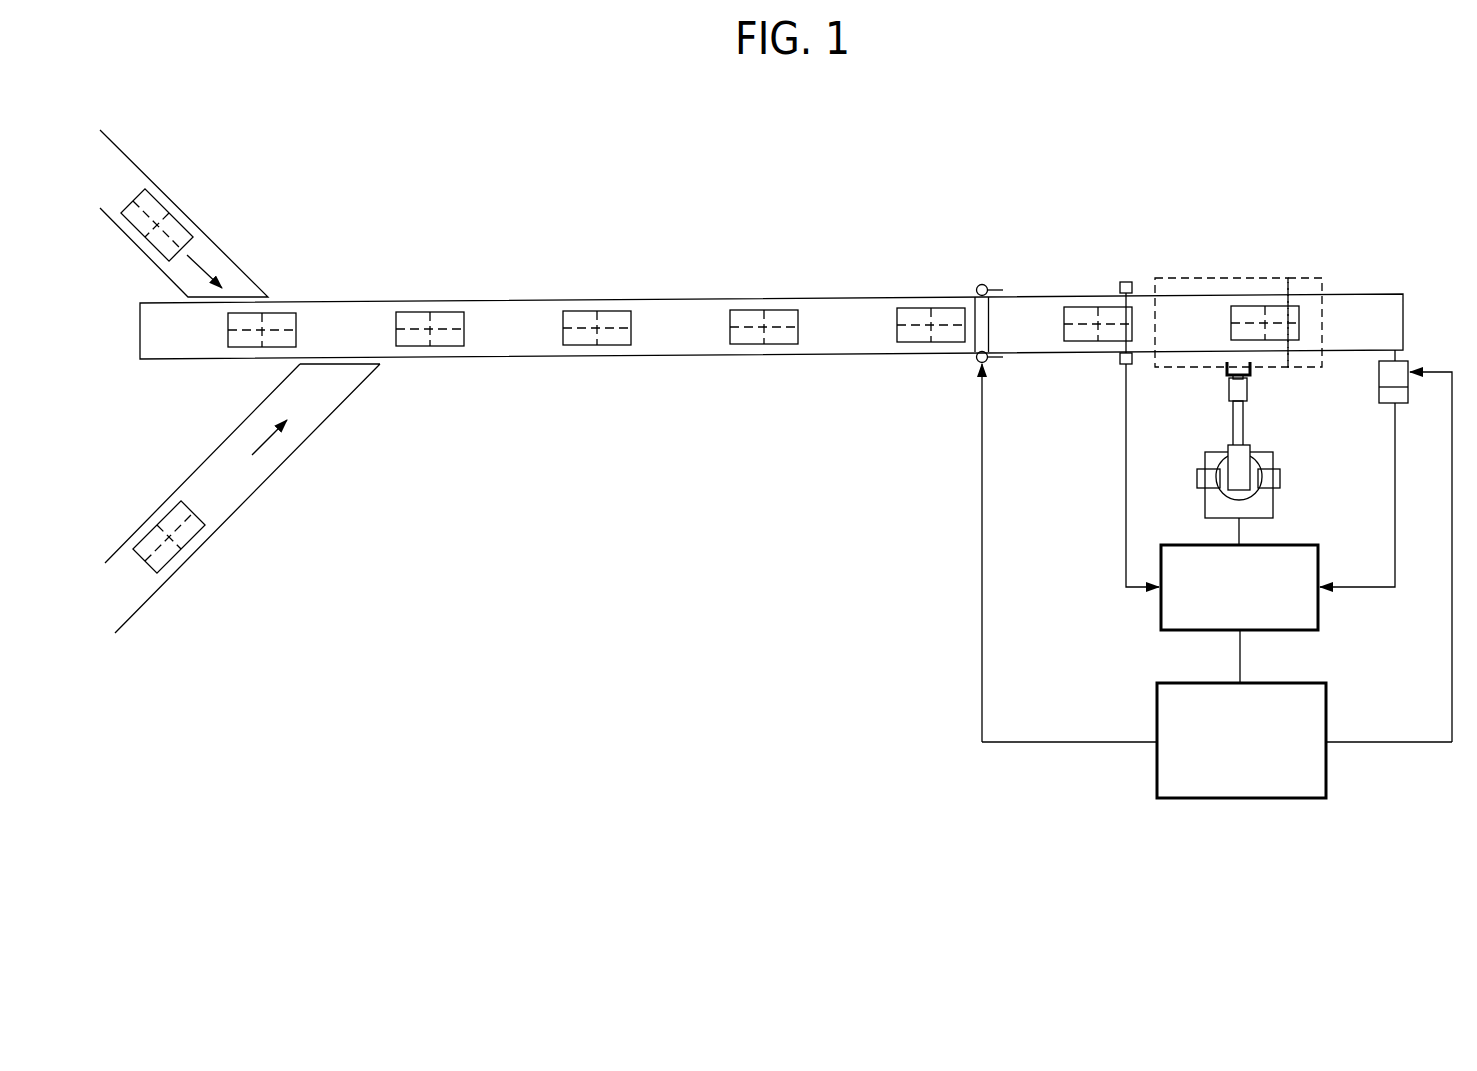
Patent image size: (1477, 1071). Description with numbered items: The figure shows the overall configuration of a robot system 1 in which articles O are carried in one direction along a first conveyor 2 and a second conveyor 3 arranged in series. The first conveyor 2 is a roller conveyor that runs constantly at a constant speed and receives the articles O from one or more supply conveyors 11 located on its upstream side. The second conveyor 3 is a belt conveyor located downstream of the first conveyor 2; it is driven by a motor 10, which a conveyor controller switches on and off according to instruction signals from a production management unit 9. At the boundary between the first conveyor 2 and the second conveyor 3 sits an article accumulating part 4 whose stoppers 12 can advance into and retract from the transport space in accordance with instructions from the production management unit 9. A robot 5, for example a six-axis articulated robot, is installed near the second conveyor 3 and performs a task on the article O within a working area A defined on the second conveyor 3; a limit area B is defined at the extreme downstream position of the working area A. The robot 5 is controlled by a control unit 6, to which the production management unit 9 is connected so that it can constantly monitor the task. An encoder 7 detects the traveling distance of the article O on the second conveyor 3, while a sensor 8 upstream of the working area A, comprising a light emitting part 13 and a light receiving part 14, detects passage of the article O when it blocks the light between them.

The robot system 1 is at (507, 113).
The first conveyor 2 is at (650, 298).
The second conveyor 3 is at (1034, 296).
The article accumulating part 4 is at (986, 317).
The robot 5 is at (1192, 462).
The control unit 6 is at (1318, 630).
The encoder 7 is at (1378, 396).
The sensor 8 is at (1131, 315).
The production management unit 9 is at (1237, 800).
The motor 10 is at (1401, 380).
The supply conveyors 11 is at (185, 206).
The stoppers 12 is at (991, 287).
The light emitting part 13 is at (1134, 286).
The light receiving part 14 is at (1119, 362).
The article O is at (752, 310).
The working area A is at (1225, 276).
The limit area B is at (1303, 276).